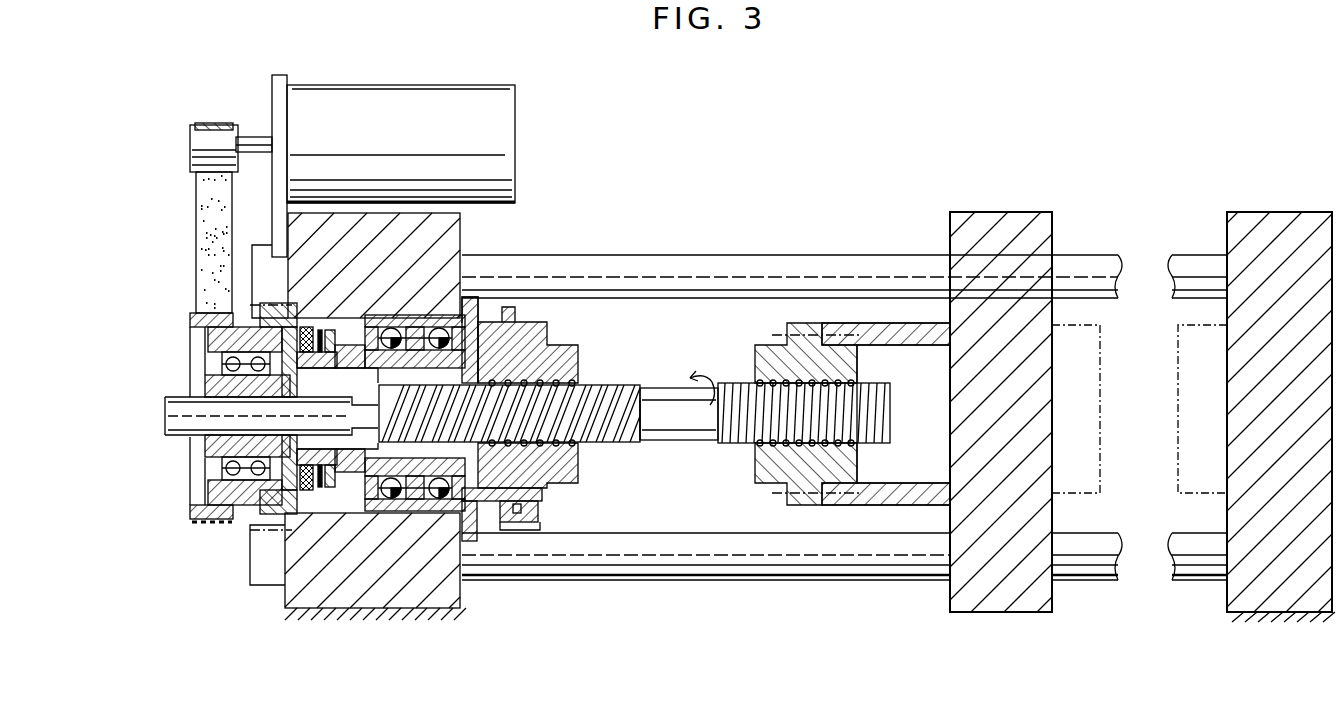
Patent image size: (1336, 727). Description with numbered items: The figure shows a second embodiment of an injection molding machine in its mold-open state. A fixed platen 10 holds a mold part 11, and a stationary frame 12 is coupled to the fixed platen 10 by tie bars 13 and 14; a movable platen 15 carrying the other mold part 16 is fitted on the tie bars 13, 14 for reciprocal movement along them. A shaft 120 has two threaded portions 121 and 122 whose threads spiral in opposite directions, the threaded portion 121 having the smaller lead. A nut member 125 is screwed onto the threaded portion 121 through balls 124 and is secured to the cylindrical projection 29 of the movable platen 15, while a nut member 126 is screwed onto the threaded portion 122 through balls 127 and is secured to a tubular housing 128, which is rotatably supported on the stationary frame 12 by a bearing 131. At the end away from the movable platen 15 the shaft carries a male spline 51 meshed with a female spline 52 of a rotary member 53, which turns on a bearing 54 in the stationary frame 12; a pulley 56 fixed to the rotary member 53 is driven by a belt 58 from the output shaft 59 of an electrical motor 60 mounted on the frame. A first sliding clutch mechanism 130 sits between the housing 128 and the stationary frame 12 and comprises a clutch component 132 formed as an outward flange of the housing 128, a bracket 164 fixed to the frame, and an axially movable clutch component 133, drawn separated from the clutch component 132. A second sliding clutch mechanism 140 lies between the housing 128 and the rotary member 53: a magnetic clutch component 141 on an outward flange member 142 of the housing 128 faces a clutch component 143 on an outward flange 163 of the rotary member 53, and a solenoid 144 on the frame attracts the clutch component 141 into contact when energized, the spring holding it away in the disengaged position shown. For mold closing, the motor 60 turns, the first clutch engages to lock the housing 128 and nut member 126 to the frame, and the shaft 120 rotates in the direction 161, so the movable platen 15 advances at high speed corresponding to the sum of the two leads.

The fixed platen 10 is at (1292, 222).
The mold part 11 is at (1178, 442).
The stationary frame 12 is at (452, 244).
The tie bar 13 is at (775, 258).
The tie bar 14 is at (768, 576).
The movable platen 15 is at (1018, 220).
The mold part 16 is at (1102, 392).
The cylindrical projection 29 is at (897, 336).
The male spline 51 is at (176, 437).
The female spline 52 is at (202, 400).
The rotary member 53 is at (190, 448).
The bearing 54 is at (238, 512).
The pulley 56 is at (186, 318).
The belt 58 is at (206, 228).
The output shaft 59 is at (257, 150).
The electrical motor 60 is at (437, 105).
The shaft 120 is at (670, 380).
The threaded portion 121 is at (740, 448).
The threaded portion 122 is at (592, 446).
The balls 124 is at (856, 446).
The nut member 125 is at (768, 352).
The nut member 126 is at (568, 346).
The balls 127 is at (583, 364).
The tubular housing 128 is at (513, 300).
The first sliding clutch mechanism 130 is at (535, 497).
The bearing 131 is at (403, 503).
The clutch component 132 is at (505, 538).
The clutch component 133 is at (520, 528).
The second sliding clutch mechanism 140 is at (325, 365).
The clutch component 141 is at (320, 327).
The outward flange member 142 is at (345, 345).
The clutch component 143 is at (332, 327).
The solenoid 144 is at (305, 327).
The direction of rotation 161 is at (690, 447).
The outward flange 163 is at (330, 327).
The bracket 164 is at (540, 518).